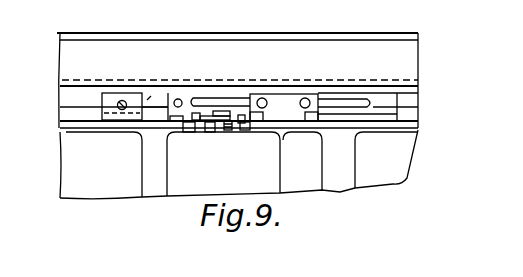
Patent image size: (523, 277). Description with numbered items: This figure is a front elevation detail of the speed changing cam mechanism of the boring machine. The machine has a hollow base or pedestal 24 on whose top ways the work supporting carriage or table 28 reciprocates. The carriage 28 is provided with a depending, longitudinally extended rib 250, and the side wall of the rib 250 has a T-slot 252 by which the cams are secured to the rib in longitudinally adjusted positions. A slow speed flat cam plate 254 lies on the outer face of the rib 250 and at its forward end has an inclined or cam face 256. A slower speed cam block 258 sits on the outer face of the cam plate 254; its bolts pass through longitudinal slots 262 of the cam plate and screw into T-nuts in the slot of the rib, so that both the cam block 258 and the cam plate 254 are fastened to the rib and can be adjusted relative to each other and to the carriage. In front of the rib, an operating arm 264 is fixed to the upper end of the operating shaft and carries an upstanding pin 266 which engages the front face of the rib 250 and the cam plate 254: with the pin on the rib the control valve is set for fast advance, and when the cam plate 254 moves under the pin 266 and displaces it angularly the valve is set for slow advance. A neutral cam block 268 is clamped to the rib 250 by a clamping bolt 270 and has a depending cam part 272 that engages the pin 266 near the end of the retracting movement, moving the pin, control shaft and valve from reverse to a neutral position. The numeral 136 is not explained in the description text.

The work supporting carriage or table 28 is at (98, 52).
The hollow base or pedestal 24 is at (62, 167).
The neutral cam block 268 is at (110, 100).
The clamping bolt 270 is at (125, 101).
The depending cam part 272 is at (143, 110).
The inclined or cam face 256 is at (168, 120).
The operating arm 264 is at (247, 130).
The upstanding pin 266 is at (244, 114).
The slower speed cam block 258 is at (285, 100).
The longitudinal slots 262 is at (341, 100).
The rib 250 is at (408, 92).
The T-slot 252 is at (408, 103).
The slow speed flat cam plate 254 is at (385, 117).
The frame member 136 is at (509, 110).